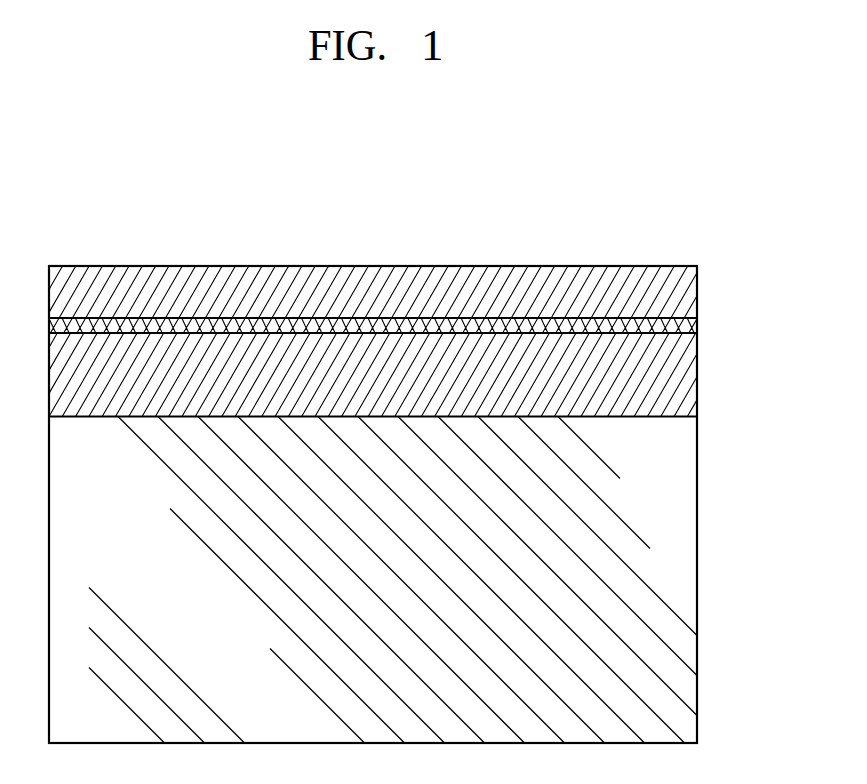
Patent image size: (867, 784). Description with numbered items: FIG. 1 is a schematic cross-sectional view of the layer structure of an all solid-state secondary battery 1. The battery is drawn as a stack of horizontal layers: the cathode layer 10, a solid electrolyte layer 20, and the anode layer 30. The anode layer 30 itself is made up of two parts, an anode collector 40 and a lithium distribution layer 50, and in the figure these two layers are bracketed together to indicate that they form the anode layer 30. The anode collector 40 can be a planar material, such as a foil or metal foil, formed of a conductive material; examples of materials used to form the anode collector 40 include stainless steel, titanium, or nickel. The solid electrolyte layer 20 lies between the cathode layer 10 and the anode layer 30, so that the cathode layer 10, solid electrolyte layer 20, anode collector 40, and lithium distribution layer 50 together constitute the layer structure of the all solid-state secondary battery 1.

The all solid-state secondary battery 1 is at (673, 240).
The cathode layer 10 is at (697, 580).
The solid electrolyte layer 20 is at (697, 374).
The anode layer 30 is at (436, 305).
The anode collector 40 is at (697, 292).
The lithium distribution layer 50 is at (697, 326).